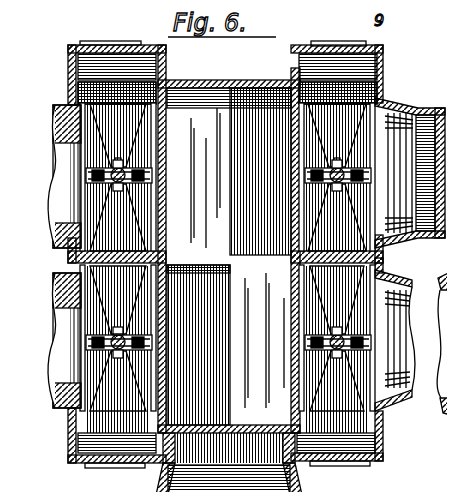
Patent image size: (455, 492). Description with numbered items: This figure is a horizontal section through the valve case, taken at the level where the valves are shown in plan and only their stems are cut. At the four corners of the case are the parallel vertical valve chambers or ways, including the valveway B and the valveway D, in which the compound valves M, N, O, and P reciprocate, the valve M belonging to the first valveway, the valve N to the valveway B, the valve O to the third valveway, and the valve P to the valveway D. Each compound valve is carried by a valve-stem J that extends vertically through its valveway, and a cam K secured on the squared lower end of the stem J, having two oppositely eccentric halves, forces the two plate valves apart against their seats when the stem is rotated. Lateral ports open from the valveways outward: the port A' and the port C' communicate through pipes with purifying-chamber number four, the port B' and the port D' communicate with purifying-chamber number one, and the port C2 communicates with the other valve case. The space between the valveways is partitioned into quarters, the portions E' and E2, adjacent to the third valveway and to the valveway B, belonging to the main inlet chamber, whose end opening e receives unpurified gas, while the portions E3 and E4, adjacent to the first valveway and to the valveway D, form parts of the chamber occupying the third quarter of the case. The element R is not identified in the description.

The lateral port A' is at (49, 176).
The valve chamber or way B is at (337, 135).
The port B' is at (410, 173).
The port C' is at (54, 340).
The port C2 is at (438, 251).
The valve chamber or way D is at (337, 300).
The lateral port D' is at (395, 340).
The portion of chamber E E' is at (198, 345).
The portion of chamber E E2 is at (260, 171).
The chamber portion E3 is at (203, 178).
The chamber portion E4 is at (264, 340).
The valve-stem J is at (119, 166).
The cam K is at (96, 145).
The valve M is at (137, 200).
The valve N is at (352, 201).
The valve O is at (133, 372).
The valve P is at (350, 371).
The upper valve cone R is at (94, 127).
The opening e is at (112, 312).